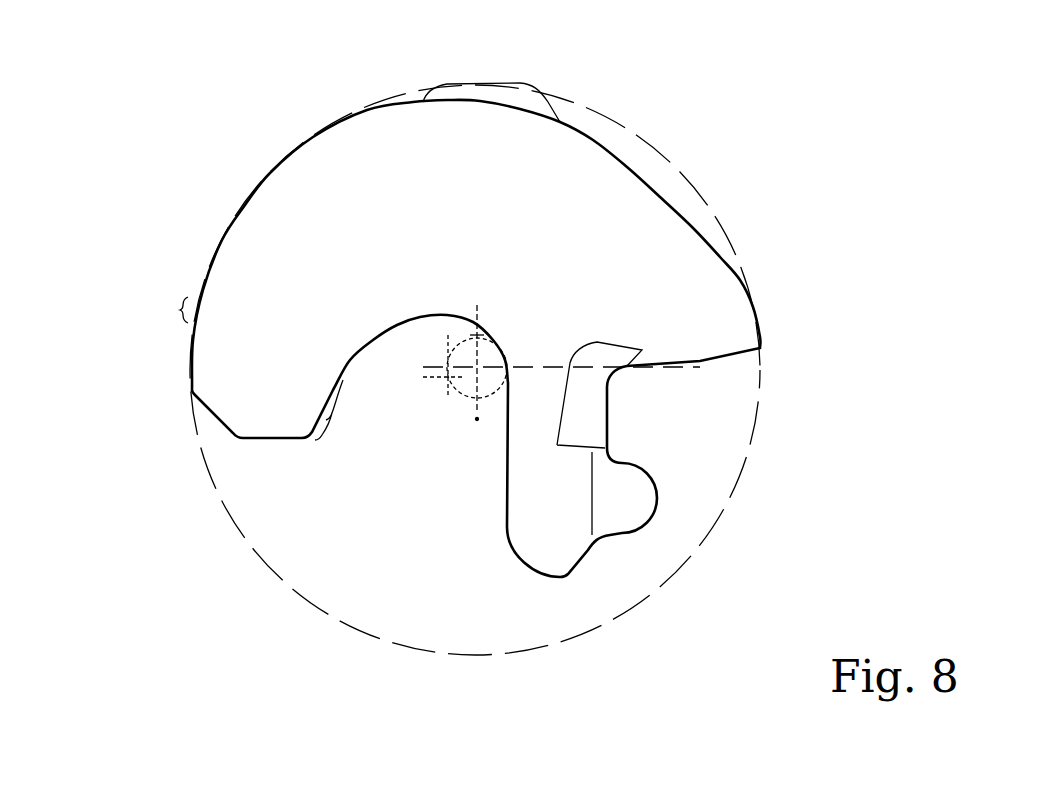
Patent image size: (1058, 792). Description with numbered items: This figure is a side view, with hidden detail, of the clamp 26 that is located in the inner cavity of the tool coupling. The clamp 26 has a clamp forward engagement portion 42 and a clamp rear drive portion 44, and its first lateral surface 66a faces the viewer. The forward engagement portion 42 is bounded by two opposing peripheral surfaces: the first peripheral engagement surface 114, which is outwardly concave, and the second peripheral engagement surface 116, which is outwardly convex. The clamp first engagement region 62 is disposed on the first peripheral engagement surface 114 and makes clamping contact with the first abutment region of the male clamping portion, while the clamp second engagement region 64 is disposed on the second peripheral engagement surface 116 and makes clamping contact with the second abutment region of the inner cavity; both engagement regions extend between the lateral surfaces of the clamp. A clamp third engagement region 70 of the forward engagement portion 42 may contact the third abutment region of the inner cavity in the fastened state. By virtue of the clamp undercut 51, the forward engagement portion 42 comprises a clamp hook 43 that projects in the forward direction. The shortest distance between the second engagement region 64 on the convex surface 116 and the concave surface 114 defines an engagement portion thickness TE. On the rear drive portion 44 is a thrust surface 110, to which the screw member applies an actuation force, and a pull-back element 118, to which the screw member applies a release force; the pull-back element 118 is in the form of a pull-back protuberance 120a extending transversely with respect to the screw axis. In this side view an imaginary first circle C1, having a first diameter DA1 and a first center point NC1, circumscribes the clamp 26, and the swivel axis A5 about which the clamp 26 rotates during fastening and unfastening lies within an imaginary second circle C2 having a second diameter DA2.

The clamp 26 is at (777, 118).
The clamp forward engagement portion 42 is at (273, 273).
The clamp hook 43 is at (207, 427).
The clamp rear drive portion 44 is at (653, 300).
The clamp undercut 51 is at (323, 452).
The clamp first engagement region 62 is at (340, 410).
The clamp second engagement region 64 is at (169, 310).
The first lateral surface 66a is at (495, 217).
The clamp third engagement region 70 is at (540, 87).
The thrust surface 110 is at (701, 361).
The first peripheral engagement surface 114 is at (373, 358).
The second peripheral engagement surface 116 is at (268, 173).
The pull-back element 118 is at (657, 503).
The pull-back protuberance 120a is at (615, 500).
The imaginary first circle C1 is at (668, 158).
The imaginary second circle C2 is at (449, 330).
The first diameter DA1 is at (329, 615).
The second diameter DA2 is at (492, 394).
The swivel axis A5 is at (445, 371).
The engagement portion thickness TE is at (327, 392).
The first center point NC1 is at (480, 385).